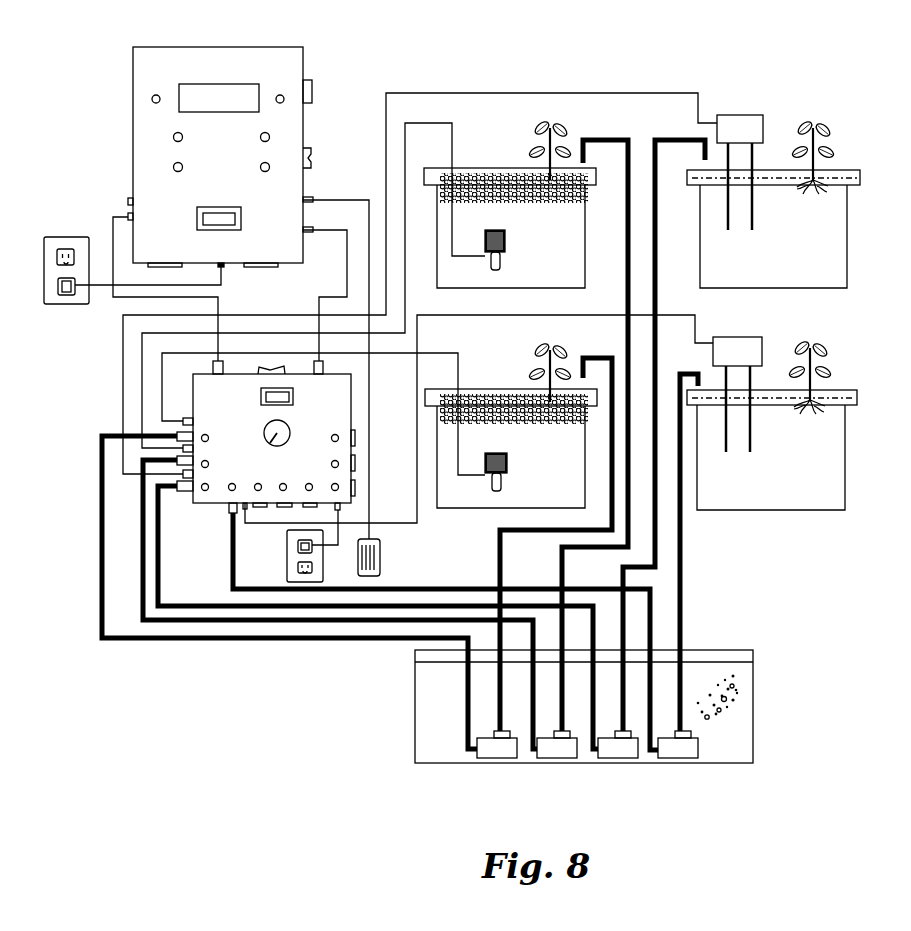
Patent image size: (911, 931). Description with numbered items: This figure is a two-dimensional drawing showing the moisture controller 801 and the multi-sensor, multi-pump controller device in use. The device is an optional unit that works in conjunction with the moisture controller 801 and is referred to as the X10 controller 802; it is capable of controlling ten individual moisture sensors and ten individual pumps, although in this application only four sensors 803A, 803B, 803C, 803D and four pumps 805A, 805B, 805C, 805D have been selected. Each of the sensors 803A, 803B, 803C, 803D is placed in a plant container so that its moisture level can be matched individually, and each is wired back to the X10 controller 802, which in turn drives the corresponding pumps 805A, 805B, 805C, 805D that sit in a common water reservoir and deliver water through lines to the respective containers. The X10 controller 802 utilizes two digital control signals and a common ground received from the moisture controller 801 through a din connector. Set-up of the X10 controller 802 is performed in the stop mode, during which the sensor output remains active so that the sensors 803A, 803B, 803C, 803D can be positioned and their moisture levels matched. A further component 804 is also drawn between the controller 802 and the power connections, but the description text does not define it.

The moisture controller 801 is at (303, 66).
The X10 controller 802 is at (337, 416).
The moisture sensor 803A is at (507, 483).
The moisture sensor 803B is at (505, 263).
The moisture sensor 803C is at (742, 123).
The moisture sensor 803D is at (738, 345).
The relay / switch device 804 is at (380, 565).
The pump 805A is at (475, 755).
The pump 805B is at (560, 750).
The pump 805C is at (623, 757).
The pump 805D is at (698, 747).